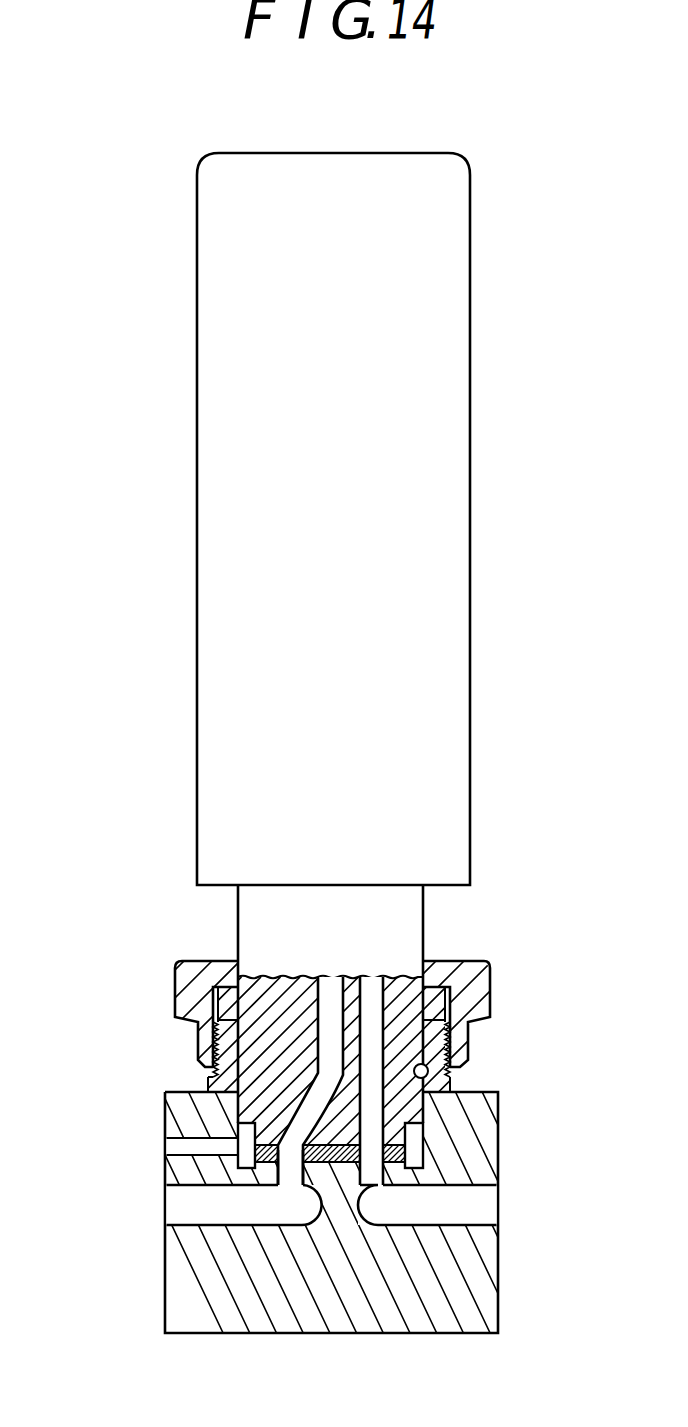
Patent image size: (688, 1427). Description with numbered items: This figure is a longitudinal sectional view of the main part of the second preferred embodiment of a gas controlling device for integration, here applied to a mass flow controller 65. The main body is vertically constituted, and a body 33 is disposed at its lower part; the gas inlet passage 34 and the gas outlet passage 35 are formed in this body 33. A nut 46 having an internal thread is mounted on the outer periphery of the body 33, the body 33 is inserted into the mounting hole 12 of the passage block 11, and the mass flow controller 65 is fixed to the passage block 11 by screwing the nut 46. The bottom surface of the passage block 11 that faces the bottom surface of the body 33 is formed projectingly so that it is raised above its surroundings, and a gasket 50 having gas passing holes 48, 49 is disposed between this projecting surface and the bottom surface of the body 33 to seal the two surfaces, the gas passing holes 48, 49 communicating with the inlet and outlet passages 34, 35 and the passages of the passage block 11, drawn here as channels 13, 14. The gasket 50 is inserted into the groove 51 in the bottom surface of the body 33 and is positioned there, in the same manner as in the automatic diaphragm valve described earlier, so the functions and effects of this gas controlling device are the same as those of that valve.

The mass flow controller 65 is at (513, 285).
The body 33 is at (425, 950).
The nut 46 is at (175, 990).
The gas inlet passage 34 is at (315, 1100).
The gas outlet passage 35 is at (375, 1103).
The mounting hole 12 is at (440, 1085).
The passage block 11 is at (499, 1149).
The groove 51 is at (300, 1142).
The gasket 50 is at (237, 1160).
The first intake passage 13 is at (178, 1195).
The second intake passage 14 is at (483, 1193).
The gas passing hole 48 is at (291, 1166).
The gas passing hole 49 is at (371, 1160).